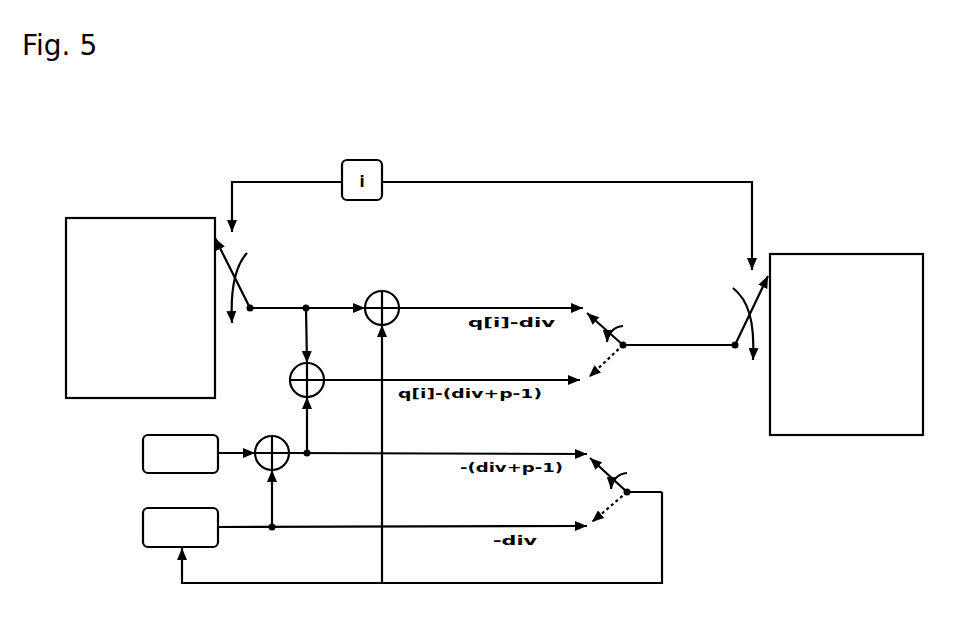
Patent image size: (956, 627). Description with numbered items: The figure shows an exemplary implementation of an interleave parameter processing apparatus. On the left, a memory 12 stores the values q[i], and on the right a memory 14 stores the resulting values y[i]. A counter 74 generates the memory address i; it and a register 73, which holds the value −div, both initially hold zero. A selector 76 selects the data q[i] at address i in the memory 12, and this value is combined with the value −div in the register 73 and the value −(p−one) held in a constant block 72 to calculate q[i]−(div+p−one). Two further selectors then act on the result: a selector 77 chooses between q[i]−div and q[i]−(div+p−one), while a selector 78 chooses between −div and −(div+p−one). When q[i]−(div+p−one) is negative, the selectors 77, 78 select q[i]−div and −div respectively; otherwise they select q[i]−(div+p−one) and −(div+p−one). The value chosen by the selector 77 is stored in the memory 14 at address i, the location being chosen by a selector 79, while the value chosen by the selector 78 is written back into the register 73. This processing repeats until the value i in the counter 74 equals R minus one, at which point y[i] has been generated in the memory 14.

The memory 12 is at (83, 218).
The memory 14 is at (790, 255).
The constant block 72 is at (155, 468).
The register 73 is at (155, 547).
The counter 74 is at (362, 200).
The selector 76 is at (250, 290).
The selector 77 is at (605, 307).
The selector 78 is at (625, 477).
The selector 79 is at (733, 307).